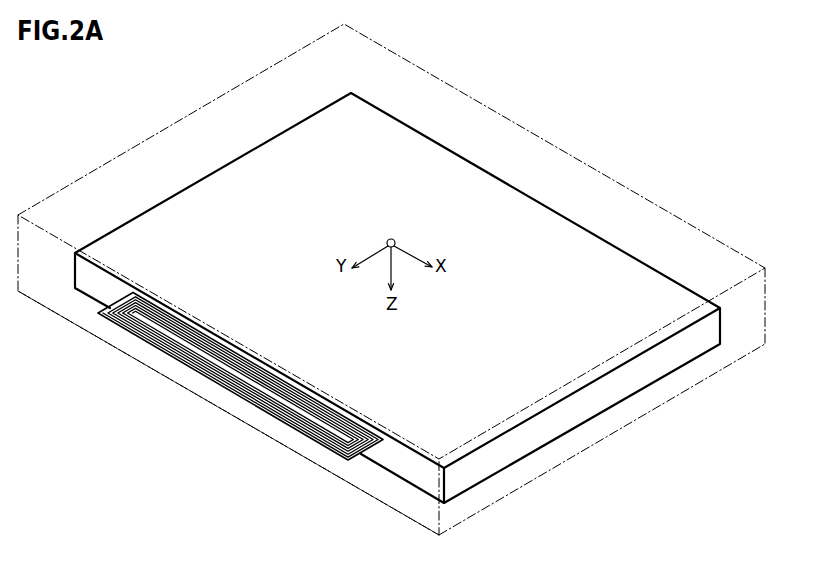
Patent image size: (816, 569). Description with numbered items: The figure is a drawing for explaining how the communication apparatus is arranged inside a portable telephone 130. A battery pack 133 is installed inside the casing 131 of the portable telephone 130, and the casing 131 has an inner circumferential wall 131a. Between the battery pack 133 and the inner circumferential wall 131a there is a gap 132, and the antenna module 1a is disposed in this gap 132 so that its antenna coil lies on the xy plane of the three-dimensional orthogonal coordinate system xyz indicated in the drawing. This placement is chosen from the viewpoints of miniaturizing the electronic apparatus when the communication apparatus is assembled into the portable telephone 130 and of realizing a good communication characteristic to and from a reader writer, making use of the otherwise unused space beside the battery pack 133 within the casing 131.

The antenna module 1a is at (266, 410).
The portable telephone 130 is at (391, 286).
The casing 131 is at (391, 286).
The inner circumferential wall 131a is at (418, 508).
The gap 132 is at (222, 381).
The battery pack 133 is at (535, 200).